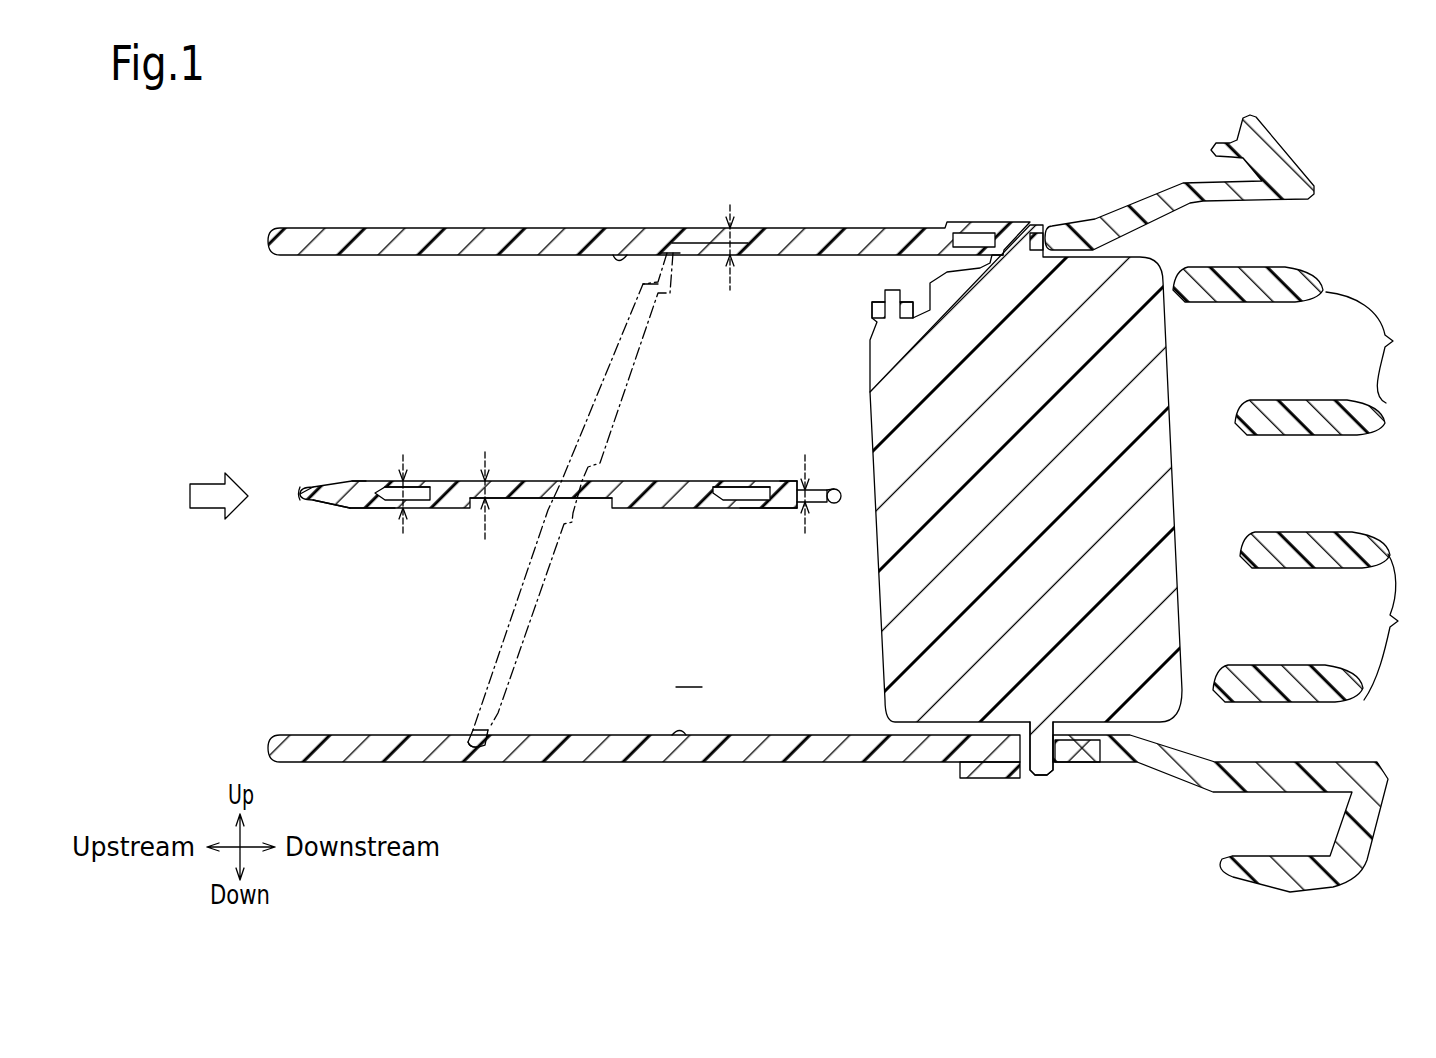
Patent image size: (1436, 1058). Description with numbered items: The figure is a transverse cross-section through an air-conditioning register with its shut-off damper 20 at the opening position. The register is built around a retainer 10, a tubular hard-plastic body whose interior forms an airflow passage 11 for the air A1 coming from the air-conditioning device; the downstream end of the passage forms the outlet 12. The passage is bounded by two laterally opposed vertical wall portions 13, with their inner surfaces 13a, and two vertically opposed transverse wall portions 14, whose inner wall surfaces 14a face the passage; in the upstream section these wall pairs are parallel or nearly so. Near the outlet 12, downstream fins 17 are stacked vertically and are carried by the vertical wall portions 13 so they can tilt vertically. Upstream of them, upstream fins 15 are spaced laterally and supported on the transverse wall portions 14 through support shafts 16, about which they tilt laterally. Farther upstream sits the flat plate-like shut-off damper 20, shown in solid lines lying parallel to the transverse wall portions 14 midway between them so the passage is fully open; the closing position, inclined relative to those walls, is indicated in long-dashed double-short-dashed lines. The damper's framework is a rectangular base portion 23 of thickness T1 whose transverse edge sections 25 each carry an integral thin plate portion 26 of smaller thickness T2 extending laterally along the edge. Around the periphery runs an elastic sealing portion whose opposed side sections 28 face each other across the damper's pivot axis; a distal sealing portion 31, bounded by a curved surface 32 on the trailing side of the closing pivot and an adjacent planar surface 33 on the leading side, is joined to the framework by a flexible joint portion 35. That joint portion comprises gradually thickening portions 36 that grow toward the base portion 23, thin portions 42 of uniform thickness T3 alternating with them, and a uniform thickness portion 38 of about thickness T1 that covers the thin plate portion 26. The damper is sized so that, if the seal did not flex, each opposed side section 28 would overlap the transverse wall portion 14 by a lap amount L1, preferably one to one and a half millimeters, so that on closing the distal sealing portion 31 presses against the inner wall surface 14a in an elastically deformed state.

The retainer 10 is at (897, 207).
The airflow passage 11 is at (689, 672).
The outlet 12 is at (1312, 200).
The vertical wall portions 13 is at (828, 805).
The housing wall 13a is at (773, 719).
The transverse wall portions 14 is at (574, 236).
The inner wall surface 14a is at (620, 256).
The upstream fins 15 is at (1172, 508).
The support shafts 16 is at (1014, 243).
The downstream fins 17 is at (1300, 484).
The shut-off damper 20 is at (577, 407).
The base portion 23 is at (543, 612).
The transverse edge sections 25 is at (447, 481).
The thin plate portion 26 is at (422, 487).
The opposed side sections 28 is at (374, 509).
The distal sealing portion 31 is at (665, 254).
The curved surface 32 is at (303, 488).
The planar surface 33 is at (836, 490).
The joint portion 35 is at (648, 262).
The gradually thickening portions 36 is at (337, 507).
The uniform thickness portion 38 is at (366, 481).
The thin portions 42 is at (805, 487).
The air A1 is at (206, 510).
The thickness of base portion T1 is at (489, 506).
The thickness of thin plate portion T2 is at (419, 509).
The thickness of thin portion T3 is at (783, 509).
The lap amount L1 is at (739, 254).